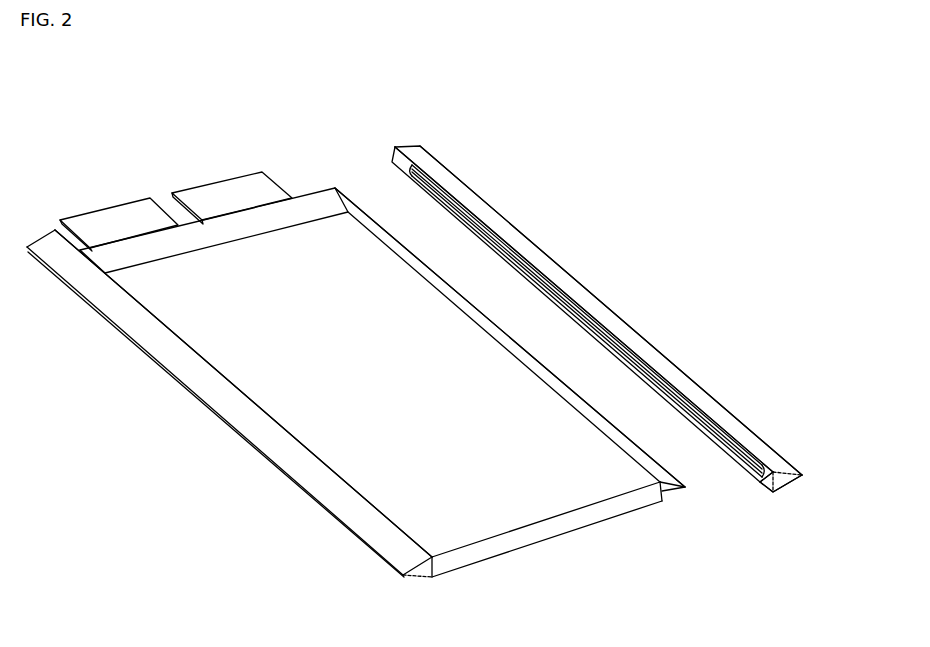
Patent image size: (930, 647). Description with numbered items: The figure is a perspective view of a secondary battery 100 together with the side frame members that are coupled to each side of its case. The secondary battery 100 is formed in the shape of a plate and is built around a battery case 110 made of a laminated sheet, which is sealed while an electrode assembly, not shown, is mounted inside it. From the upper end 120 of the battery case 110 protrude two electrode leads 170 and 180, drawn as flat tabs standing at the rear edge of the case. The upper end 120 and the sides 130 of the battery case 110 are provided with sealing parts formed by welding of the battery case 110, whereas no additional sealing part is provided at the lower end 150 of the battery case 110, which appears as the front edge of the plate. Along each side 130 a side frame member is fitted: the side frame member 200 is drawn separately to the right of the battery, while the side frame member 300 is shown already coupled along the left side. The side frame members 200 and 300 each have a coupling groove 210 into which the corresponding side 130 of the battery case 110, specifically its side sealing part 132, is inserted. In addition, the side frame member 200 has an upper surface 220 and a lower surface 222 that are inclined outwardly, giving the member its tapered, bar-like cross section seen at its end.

The secondary battery 100 is at (148, 130).
The battery case 110 is at (438, 525).
The upper end 120 is at (320, 182).
The side 130 is at (677, 504).
The side sealing part 132 is at (610, 432).
The lower end 150 is at (563, 545).
The electrode lead 170 is at (115, 217).
The electrode lead 180 is at (228, 193).
The side frame member 200 is at (553, 232).
The coupling groove 210 is at (573, 323).
The upper surface 220 is at (716, 412).
The lower surface 222 is at (787, 484).
The side frame member 300 is at (190, 405).